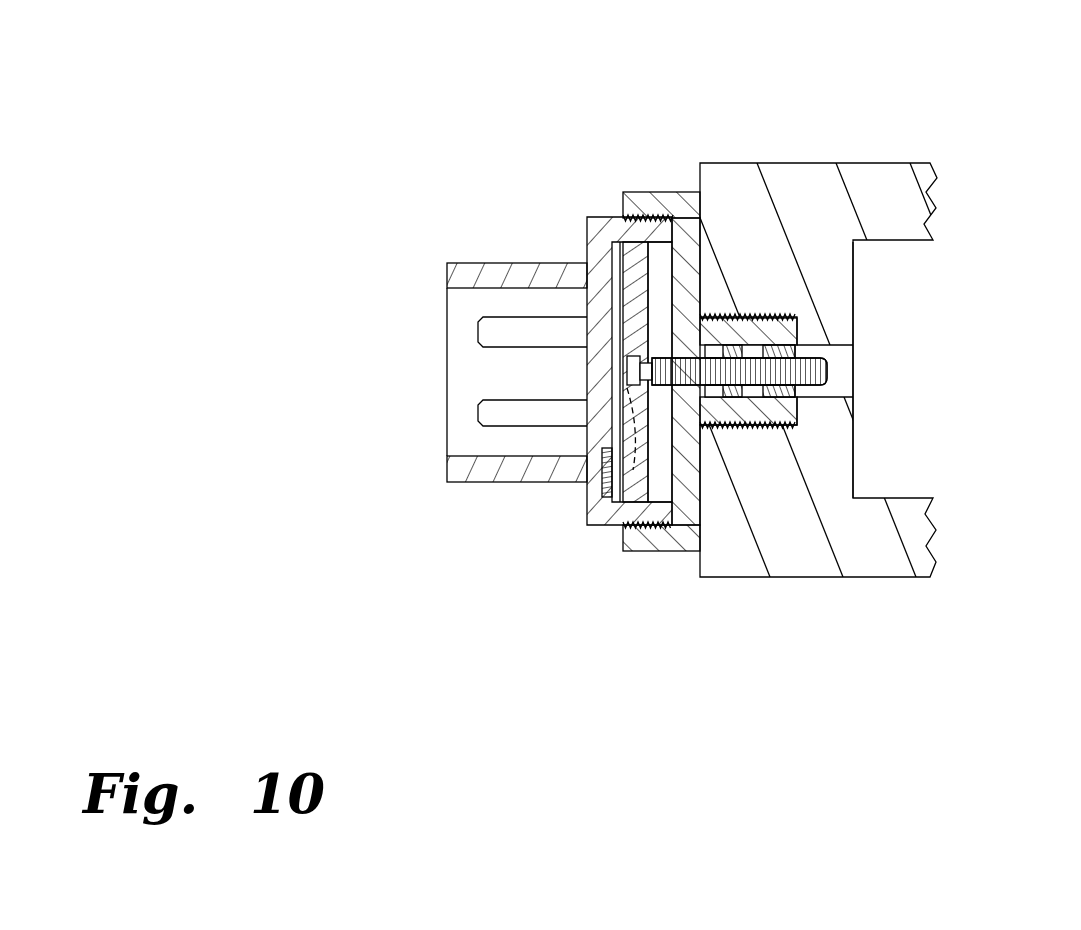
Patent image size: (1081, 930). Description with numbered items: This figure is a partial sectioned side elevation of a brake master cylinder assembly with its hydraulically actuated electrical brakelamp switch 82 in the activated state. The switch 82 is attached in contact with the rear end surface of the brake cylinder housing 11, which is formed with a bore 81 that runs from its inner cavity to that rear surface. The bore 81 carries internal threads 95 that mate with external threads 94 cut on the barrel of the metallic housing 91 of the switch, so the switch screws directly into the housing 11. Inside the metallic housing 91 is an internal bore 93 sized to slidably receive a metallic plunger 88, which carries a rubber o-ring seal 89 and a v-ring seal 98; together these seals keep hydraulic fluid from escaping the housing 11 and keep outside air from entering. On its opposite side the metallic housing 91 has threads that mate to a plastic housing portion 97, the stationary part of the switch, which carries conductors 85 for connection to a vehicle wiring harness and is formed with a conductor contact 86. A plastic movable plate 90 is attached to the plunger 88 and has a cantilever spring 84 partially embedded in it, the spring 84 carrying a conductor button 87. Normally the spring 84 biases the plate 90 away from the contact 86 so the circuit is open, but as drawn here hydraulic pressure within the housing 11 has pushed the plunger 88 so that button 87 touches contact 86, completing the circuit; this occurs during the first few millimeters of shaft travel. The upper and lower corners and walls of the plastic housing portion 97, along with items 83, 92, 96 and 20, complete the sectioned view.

The housing 11 is at (856, 158).
The wall opening 20 is at (853, 472).
The bore 81 is at (853, 363).
The hydraulically actuated electrical brakelamp switch 82 is at (544, 495).
The connector housing 83 is at (506, 262).
The cantilever spring 84 is at (614, 240).
The conductors 85 is at (483, 347).
The conductor contact 86 is at (612, 503).
The conductor button 87 is at (588, 526).
The metallic plunger 88 is at (840, 395).
The rubber o-ring seal 89 is at (770, 428).
The plastic movable plate 90 is at (670, 505).
The metallic housing 91 is at (740, 317).
The retaining nut 92 is at (628, 192).
The internal bore 93 is at (672, 218).
The external threads 94 is at (768, 405).
The internal threads 95 is at (853, 345).
The housing corner 96 is at (447, 447).
The plastic housing portion 97 is at (472, 482).
The v-ring seal 98 is at (713, 430).